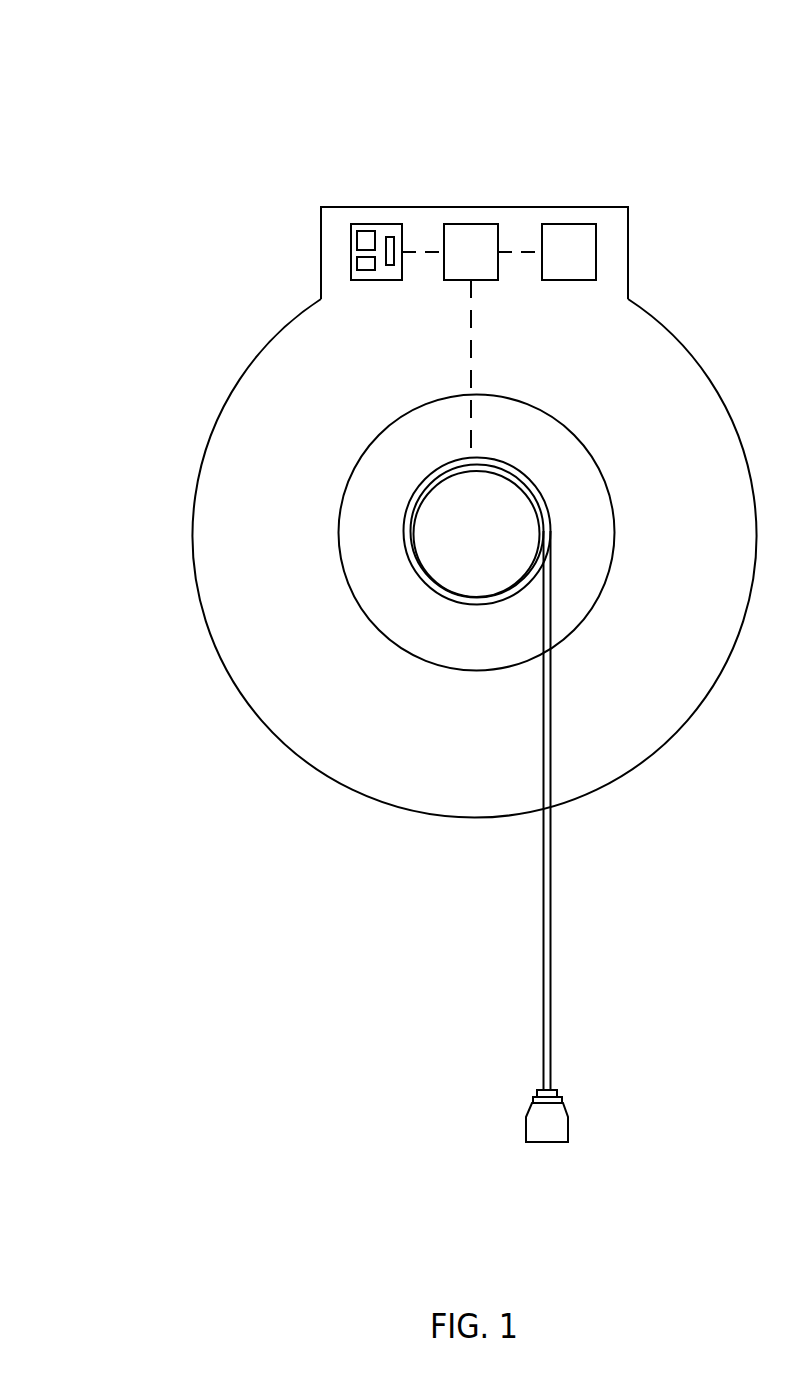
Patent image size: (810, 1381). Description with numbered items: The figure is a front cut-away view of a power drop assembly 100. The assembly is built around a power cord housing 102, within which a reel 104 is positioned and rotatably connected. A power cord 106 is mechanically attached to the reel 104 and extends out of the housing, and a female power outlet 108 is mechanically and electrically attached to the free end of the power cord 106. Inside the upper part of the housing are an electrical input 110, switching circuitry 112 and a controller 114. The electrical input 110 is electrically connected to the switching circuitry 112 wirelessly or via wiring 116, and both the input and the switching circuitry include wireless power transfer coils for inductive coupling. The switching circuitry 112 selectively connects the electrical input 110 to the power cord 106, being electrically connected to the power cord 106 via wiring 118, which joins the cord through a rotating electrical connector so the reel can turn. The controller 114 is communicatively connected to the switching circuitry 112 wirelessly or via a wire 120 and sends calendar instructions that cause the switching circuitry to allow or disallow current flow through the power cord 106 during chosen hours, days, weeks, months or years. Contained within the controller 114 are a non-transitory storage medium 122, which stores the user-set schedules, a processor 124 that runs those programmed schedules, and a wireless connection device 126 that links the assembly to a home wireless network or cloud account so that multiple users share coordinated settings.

The power drop assembly 100 is at (140, 85).
The power cord housing 102 is at (474, 512).
The reel 104 is at (477, 533).
The power cord 106 is at (553, 925).
The female power outlet 108 is at (567, 1110).
The electrical input 110 is at (596, 240).
The switching circuitry 112 is at (487, 280).
The controller 114 is at (350, 265).
The wiring 116 is at (524, 252).
The wiring 118 is at (470, 355).
The wire 120 is at (427, 252).
The non-transitory storage medium 122 is at (357, 227).
The processor 124 is at (357, 273).
The wireless connection device 126 is at (387, 230).